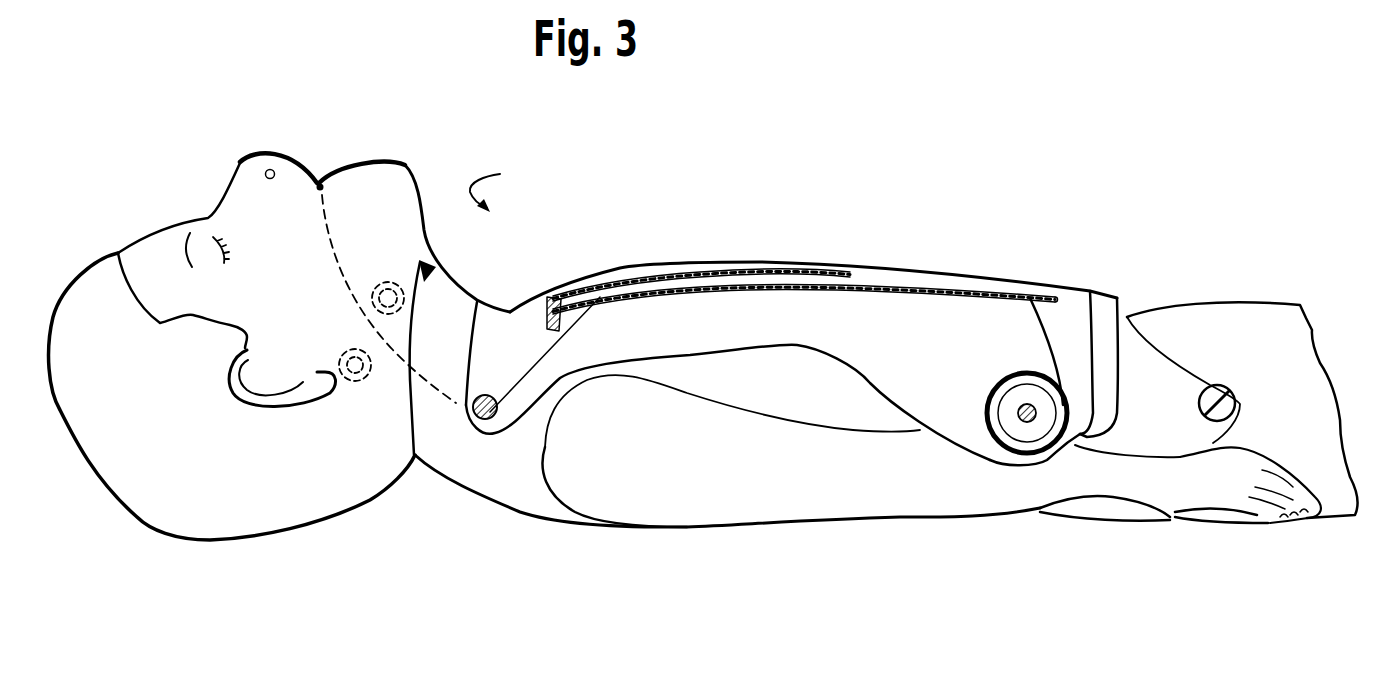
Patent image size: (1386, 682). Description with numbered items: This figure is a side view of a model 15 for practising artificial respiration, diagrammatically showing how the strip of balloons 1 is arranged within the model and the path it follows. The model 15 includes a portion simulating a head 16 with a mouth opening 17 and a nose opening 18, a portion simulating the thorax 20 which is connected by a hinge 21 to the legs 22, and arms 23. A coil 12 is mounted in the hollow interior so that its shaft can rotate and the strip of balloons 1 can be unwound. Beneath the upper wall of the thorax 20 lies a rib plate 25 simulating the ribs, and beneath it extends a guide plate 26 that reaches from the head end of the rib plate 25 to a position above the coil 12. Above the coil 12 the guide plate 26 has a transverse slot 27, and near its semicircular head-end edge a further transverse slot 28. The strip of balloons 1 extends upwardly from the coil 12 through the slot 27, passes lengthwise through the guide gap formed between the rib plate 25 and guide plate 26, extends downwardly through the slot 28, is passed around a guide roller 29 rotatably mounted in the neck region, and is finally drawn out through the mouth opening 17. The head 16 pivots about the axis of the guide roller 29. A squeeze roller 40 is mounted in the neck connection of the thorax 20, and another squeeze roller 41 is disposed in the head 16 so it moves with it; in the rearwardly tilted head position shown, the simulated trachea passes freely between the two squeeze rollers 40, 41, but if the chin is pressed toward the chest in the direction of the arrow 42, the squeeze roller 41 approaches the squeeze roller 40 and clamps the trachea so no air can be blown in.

The strip of balloons 1 is at (343, 270).
The coil 12 is at (988, 404).
The model 15 is at (604, 541).
The head 16 is at (137, 508).
The mouth opening 17 is at (316, 190).
The nose opening 18 is at (270, 170).
The thorax 20 is at (668, 263).
The hinge 21 is at (247, 161).
The legs 22 is at (1253, 323).
The arms 23 is at (923, 503).
The rib plate 25 is at (807, 268).
The guide plate 26 is at (717, 296).
The slot 27 is at (1027, 300).
The slot 28 is at (600, 300).
The guide roller 29 is at (478, 418).
The squeeze roller 40 is at (403, 296).
The squeeze roller 41 is at (360, 383).
The arrow 42 is at (500, 186).